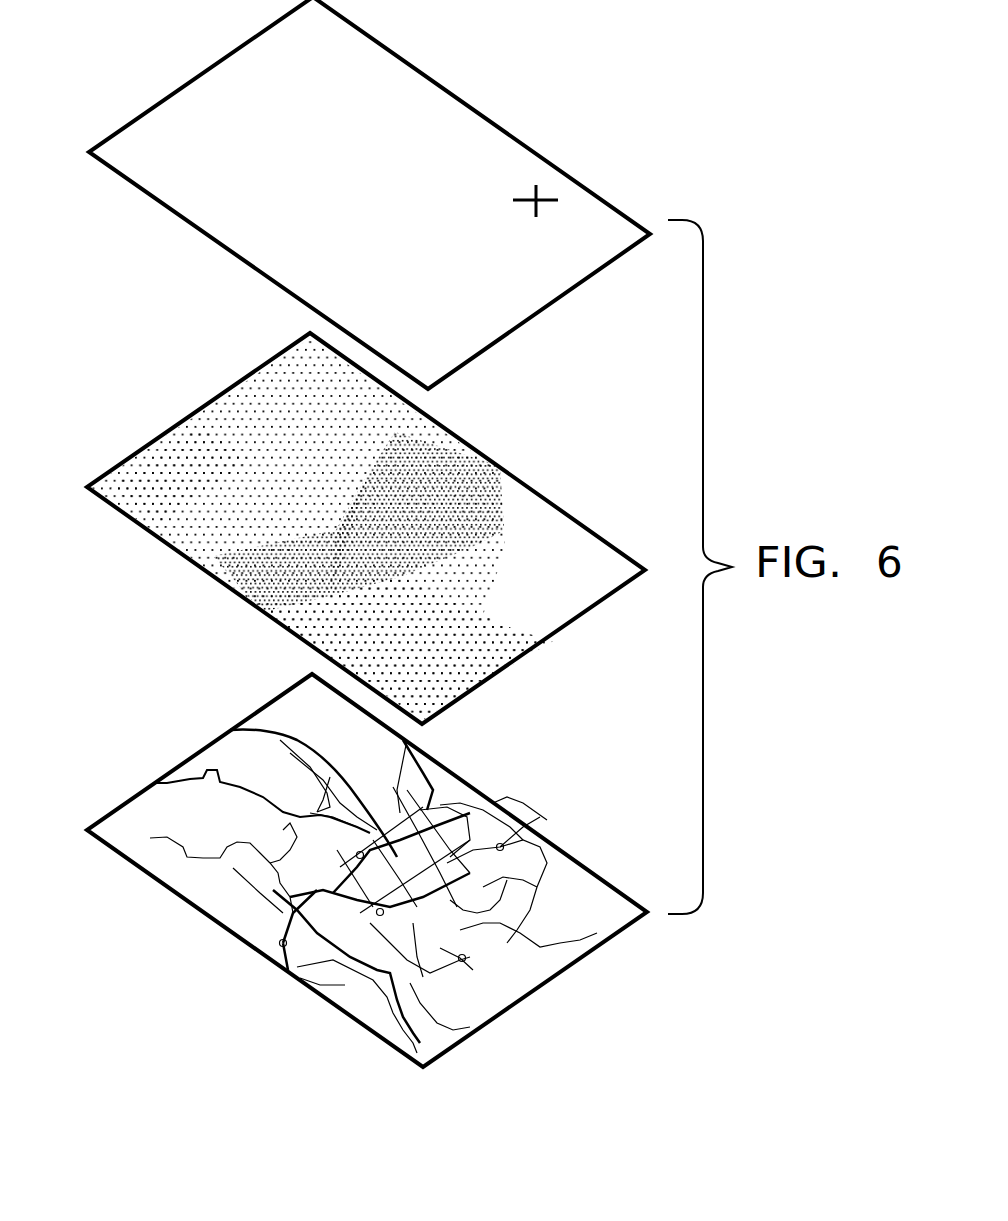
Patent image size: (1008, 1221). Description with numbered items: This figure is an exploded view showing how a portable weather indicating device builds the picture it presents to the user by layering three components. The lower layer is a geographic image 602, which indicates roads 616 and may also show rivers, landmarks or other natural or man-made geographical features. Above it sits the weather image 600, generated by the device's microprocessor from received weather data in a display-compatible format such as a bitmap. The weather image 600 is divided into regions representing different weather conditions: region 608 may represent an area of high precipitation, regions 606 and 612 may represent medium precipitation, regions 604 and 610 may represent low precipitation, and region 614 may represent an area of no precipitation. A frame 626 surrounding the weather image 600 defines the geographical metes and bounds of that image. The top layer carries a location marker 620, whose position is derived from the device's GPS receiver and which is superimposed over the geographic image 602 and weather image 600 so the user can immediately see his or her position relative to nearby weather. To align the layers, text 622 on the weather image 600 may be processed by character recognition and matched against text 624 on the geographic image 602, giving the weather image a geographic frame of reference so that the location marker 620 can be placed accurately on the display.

The weather image 600 is at (164, 413).
The geographic image 602 is at (170, 756).
The region 604 is at (134, 502).
The region 606 is at (196, 533).
The region 608 is at (254, 579).
The region 610 is at (315, 624).
The region 612 is at (473, 673).
The region 614 is at (566, 592).
The roads 616 is at (157, 840).
The location marker 620 is at (537, 189).
The text 622 is at (571, 527).
The text 624 is at (575, 860).
The frame 626 is at (115, 468).